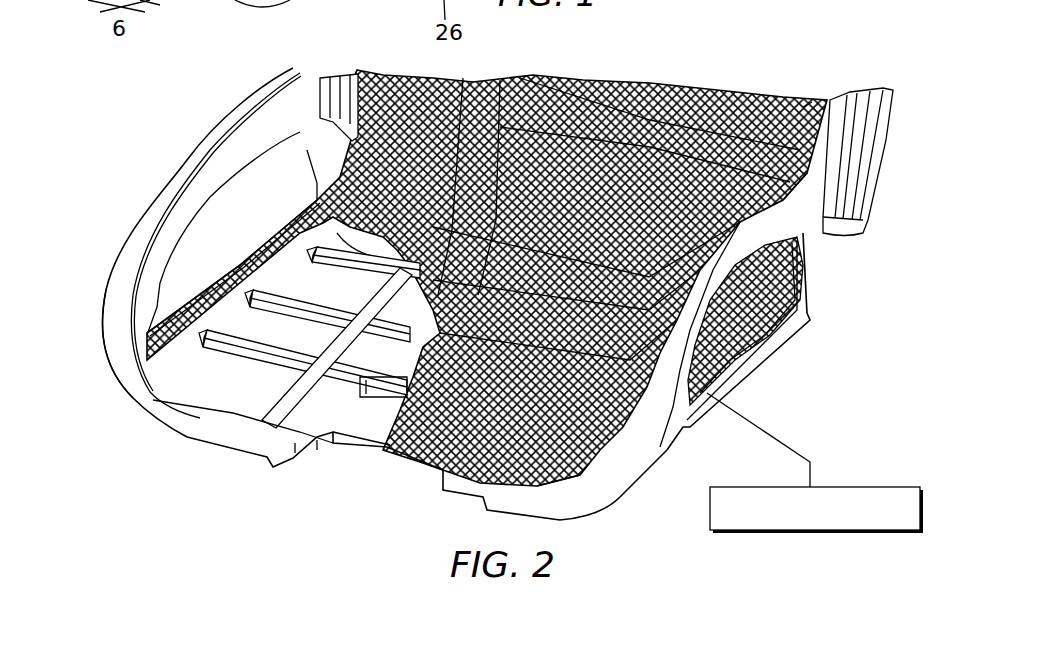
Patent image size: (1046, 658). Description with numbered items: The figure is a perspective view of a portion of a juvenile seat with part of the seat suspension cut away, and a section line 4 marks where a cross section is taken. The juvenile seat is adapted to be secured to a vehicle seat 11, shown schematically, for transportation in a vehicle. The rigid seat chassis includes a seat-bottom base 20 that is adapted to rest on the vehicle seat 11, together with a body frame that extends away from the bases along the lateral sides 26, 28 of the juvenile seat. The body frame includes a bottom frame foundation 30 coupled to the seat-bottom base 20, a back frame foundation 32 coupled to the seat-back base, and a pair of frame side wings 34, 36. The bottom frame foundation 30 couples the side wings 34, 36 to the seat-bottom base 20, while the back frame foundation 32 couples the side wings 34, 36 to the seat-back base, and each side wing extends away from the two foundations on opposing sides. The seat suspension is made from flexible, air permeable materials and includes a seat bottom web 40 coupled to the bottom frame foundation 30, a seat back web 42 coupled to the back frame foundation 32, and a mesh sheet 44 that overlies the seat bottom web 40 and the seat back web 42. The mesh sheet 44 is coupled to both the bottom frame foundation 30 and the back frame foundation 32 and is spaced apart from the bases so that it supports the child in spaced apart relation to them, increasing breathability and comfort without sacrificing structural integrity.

The section line 4- 4 is at (133, 188).
The vehicle seat 11 is at (843, 487).
The seat-bottom base 20 is at (303, 467).
The lateral side 26 is at (840, 270).
The lateral side 28 is at (143, 147).
The bottom frame foundation 30 is at (117, 388).
The back frame foundation 32 is at (883, 100).
The frame side wing 34 is at (793, 207).
The frame side wing 36 is at (222, 117).
The seat bottom web 40 is at (210, 363).
The seat back web 42 is at (803, 107).
The mesh sheet 44 is at (580, 480).